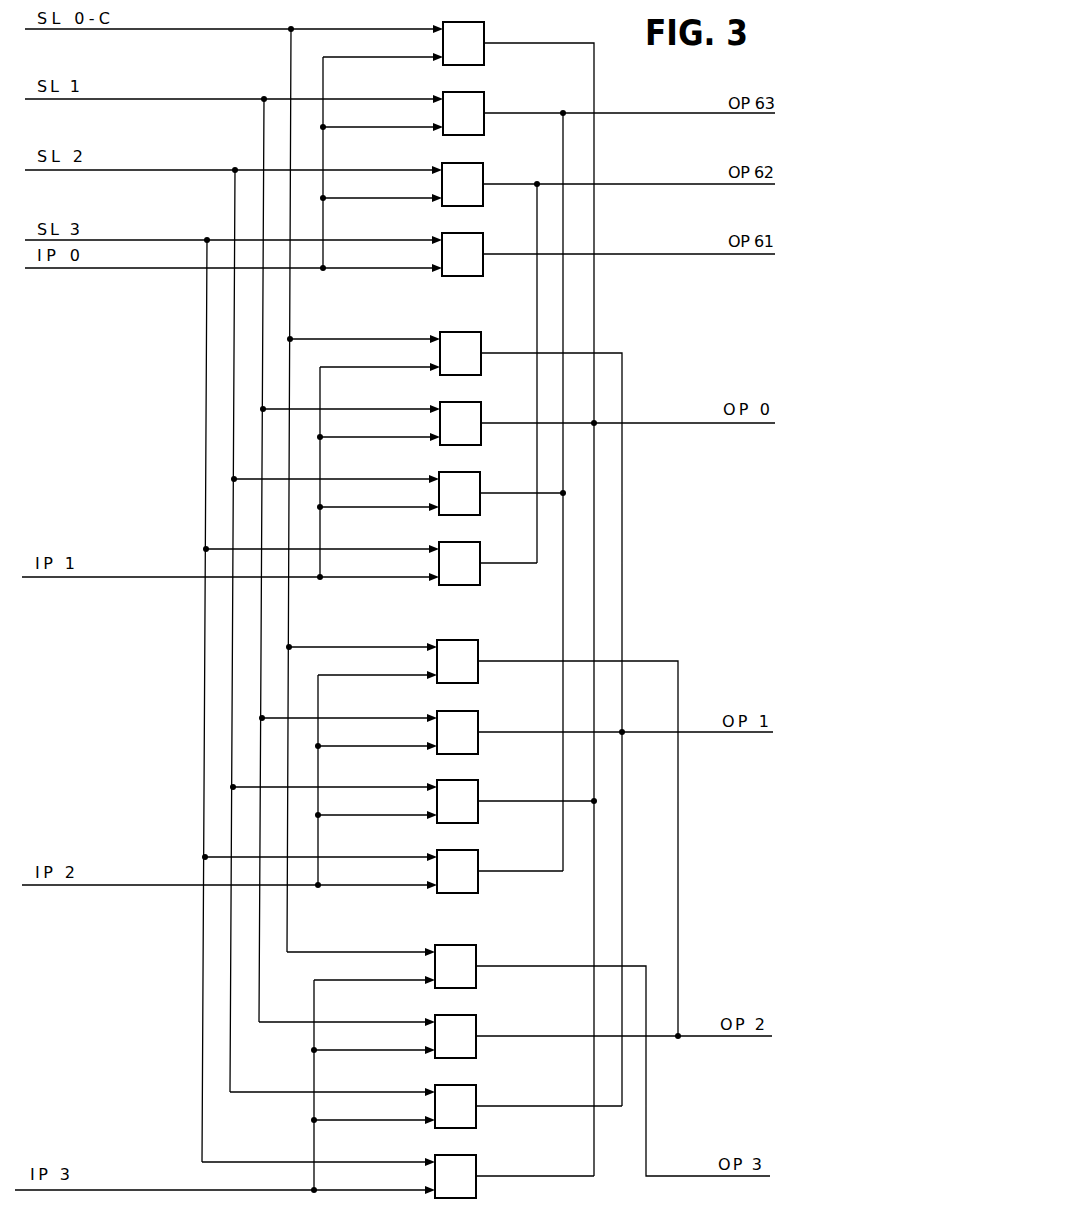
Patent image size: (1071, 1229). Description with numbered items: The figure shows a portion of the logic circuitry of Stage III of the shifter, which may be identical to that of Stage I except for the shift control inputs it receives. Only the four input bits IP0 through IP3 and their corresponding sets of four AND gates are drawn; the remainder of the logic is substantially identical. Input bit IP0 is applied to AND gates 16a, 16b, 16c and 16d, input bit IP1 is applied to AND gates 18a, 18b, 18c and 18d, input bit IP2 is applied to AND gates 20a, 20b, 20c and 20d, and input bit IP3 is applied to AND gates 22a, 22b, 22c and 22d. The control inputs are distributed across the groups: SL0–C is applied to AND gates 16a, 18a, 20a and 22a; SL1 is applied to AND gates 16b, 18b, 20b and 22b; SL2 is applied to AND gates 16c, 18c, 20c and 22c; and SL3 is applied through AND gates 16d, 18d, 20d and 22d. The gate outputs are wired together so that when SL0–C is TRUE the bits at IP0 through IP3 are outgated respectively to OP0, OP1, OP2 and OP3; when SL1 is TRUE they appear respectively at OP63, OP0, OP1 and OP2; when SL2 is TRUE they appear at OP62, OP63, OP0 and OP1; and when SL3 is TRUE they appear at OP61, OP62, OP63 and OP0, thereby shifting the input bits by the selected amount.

The AND gate 16a is at (481, 30).
The AND gate 16b is at (481, 100).
The AND gate 16c is at (480, 171).
The AND gate 16d is at (480, 241).
The AND gate 18a is at (478, 340).
The AND gate 18b is at (478, 410).
The AND gate 18c is at (477, 480).
The AND gate 18d is at (477, 550).
The AND gate 20a is at (475, 648).
The AND gate 20b is at (475, 719).
The AND gate 20c is at (475, 788).
The AND gate 20d is at (475, 858).
The AND gate 22a is at (473, 953).
The AND gate 22b is at (473, 1023).
The AND gate 22c is at (473, 1093).
The AND gate 22d is at (473, 1163).